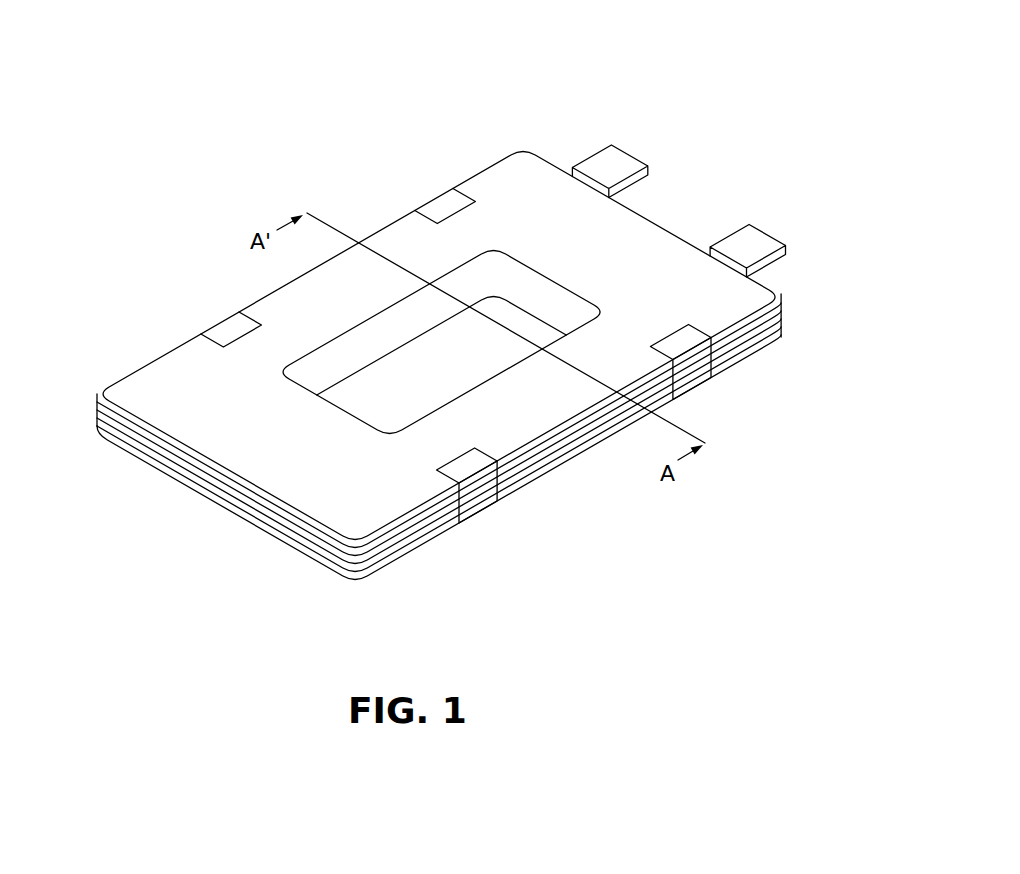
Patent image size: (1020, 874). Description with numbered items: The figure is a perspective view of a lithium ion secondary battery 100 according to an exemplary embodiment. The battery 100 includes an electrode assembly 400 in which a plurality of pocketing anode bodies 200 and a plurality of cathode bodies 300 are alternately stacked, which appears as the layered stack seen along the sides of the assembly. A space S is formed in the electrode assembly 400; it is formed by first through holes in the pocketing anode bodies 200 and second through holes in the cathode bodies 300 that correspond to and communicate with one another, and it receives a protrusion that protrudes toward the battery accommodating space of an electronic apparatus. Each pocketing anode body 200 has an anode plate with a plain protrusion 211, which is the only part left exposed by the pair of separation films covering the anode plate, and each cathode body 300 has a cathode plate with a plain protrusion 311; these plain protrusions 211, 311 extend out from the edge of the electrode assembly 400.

The lithium ion secondary battery 100 is at (232, 53).
The pocketing anode body 200 is at (130, 433).
The cathode body 300 is at (100, 407).
The electrode assembly 400 is at (128, 323).
The plain protrusion 211 is at (615, 158).
The plain protrusion 311 is at (743, 243).
The space S is at (400, 368).